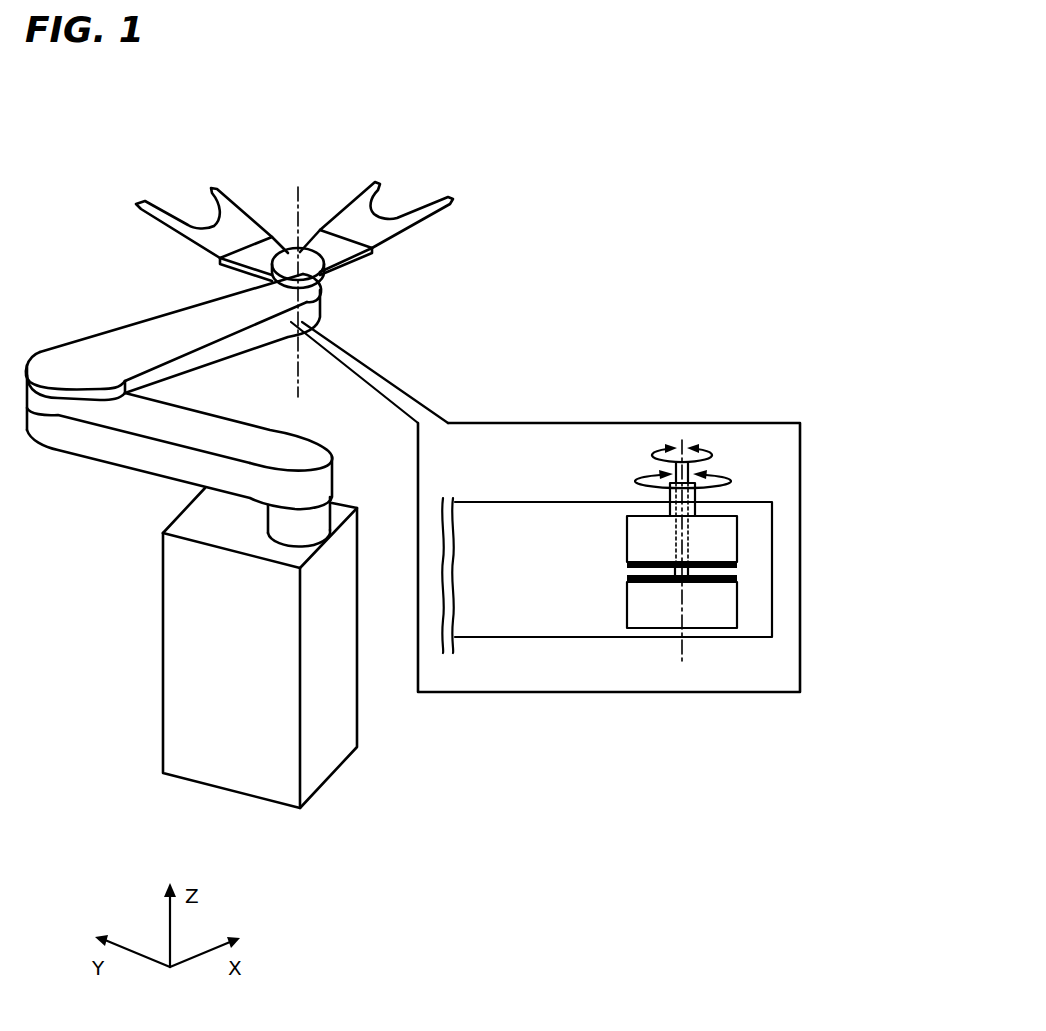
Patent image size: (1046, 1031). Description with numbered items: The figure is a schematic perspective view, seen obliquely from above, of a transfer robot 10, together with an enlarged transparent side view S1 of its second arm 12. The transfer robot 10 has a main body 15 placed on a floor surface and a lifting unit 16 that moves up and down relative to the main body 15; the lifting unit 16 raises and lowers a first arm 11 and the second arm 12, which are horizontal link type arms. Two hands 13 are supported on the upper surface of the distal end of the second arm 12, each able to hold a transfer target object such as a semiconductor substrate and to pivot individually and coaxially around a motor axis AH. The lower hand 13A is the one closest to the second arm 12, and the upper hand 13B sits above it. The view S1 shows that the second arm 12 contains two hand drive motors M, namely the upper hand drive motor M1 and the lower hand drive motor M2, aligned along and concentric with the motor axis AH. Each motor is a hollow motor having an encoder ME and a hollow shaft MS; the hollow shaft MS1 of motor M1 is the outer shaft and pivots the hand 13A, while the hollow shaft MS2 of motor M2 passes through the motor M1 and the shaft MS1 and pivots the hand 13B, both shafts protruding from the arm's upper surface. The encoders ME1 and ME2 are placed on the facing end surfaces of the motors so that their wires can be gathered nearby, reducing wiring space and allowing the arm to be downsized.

The transfer robot 10 is at (70, 268).
The first arm 11 is at (213, 432).
The second arm 12 is at (208, 296).
The hand 13 is at (306, 225).
The hand 13A is at (210, 203).
The hand 13B is at (385, 232).
The main body 15 is at (177, 602).
The lifting unit 16 is at (292, 521).
The motor axis AH is at (300, 206).
The transparent side view S1 is at (773, 420).
The hollow shaft MS is at (629, 509).
The hollow shaft MS1 is at (670, 495).
The hollow shaft MS2 is at (673, 472).
The hand drive motor M is at (628, 570).
The hand drive motor M1 is at (612, 538).
The hand drive motor M2 is at (612, 600).
The encoder ME is at (764, 565).
The encoder ME1 is at (737, 565).
The encoder ME2 is at (737, 580).